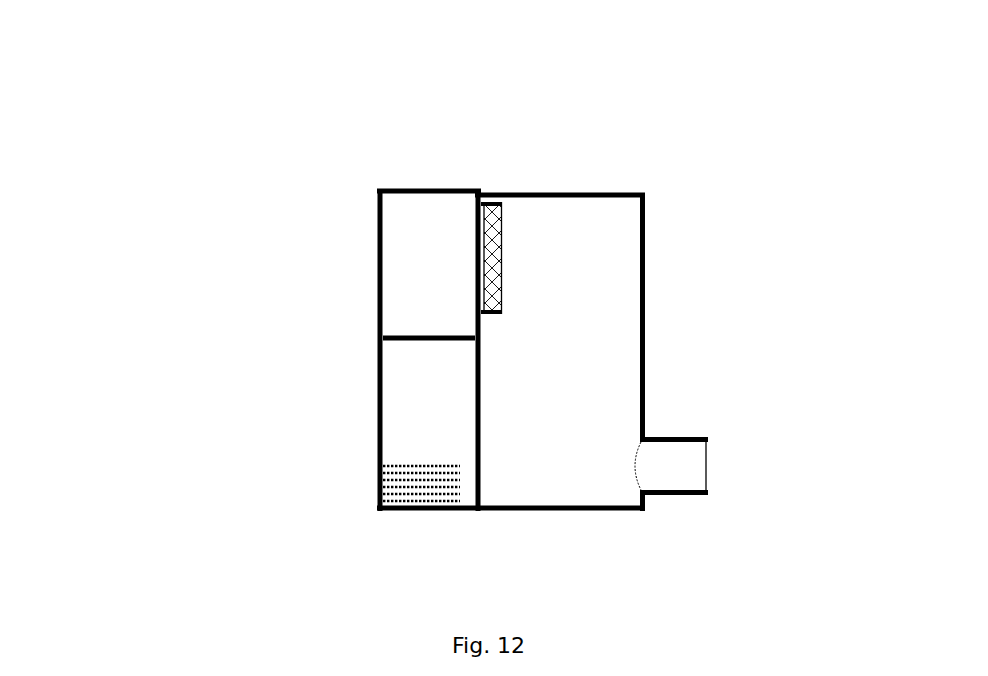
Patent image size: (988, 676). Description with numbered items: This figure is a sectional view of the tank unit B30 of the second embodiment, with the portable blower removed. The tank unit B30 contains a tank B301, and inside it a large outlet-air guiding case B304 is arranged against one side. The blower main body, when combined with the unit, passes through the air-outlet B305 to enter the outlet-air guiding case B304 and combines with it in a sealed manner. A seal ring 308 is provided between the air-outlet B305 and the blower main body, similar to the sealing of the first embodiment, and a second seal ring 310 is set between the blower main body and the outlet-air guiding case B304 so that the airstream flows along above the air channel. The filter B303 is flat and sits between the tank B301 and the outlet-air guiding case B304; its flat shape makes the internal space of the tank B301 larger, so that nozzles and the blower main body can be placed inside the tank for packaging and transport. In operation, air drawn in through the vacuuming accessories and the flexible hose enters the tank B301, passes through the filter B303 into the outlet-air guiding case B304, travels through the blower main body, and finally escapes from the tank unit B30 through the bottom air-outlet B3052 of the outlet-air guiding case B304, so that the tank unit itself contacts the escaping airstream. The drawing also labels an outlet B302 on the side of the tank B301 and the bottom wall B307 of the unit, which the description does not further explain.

The tank unit B30 is at (140, 86).
The tank B301 is at (660, 358).
The ink outlet B302 is at (712, 460).
The filter B303 is at (501, 199).
The outlet-air guiding case B304 is at (418, 255).
The air-outlet B305 is at (420, 203).
The bottom air-outlet B3052 is at (377, 483).
The bottom wall B307 is at (550, 510).
The seal ring 308 is at (445, 192).
The seal ring 310 is at (402, 334).